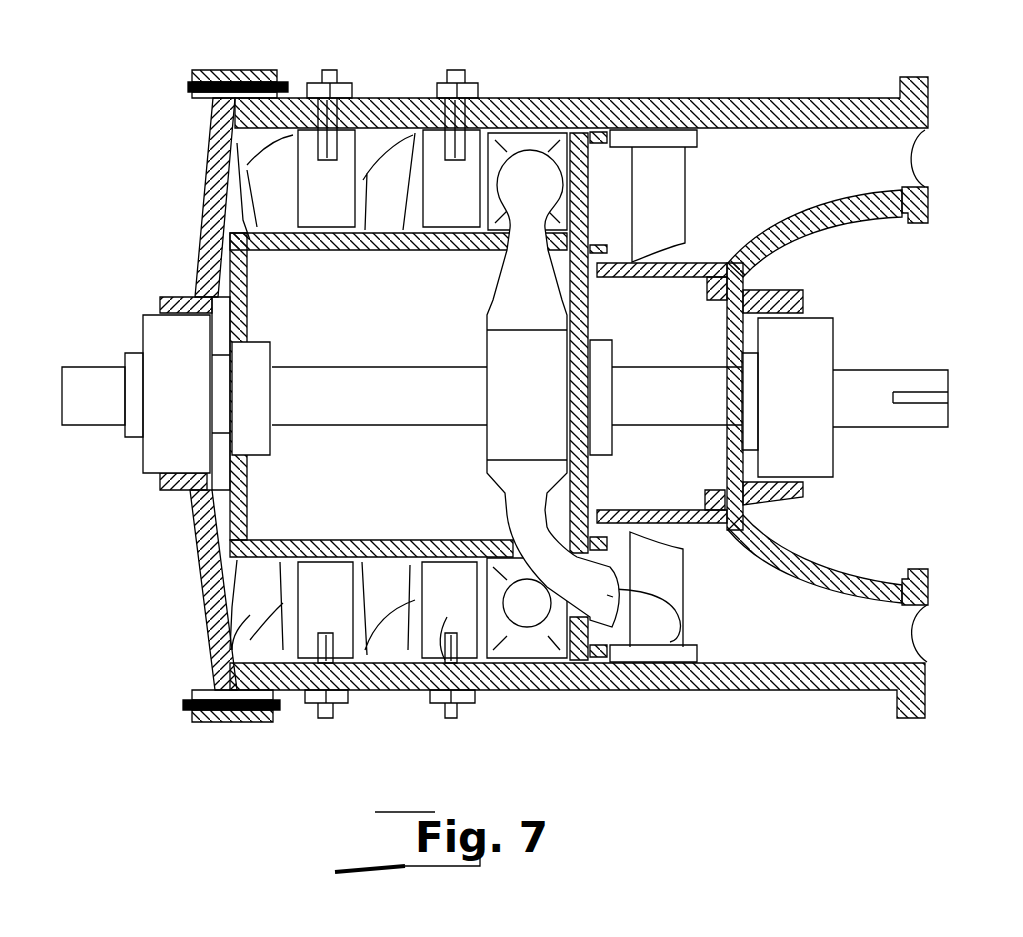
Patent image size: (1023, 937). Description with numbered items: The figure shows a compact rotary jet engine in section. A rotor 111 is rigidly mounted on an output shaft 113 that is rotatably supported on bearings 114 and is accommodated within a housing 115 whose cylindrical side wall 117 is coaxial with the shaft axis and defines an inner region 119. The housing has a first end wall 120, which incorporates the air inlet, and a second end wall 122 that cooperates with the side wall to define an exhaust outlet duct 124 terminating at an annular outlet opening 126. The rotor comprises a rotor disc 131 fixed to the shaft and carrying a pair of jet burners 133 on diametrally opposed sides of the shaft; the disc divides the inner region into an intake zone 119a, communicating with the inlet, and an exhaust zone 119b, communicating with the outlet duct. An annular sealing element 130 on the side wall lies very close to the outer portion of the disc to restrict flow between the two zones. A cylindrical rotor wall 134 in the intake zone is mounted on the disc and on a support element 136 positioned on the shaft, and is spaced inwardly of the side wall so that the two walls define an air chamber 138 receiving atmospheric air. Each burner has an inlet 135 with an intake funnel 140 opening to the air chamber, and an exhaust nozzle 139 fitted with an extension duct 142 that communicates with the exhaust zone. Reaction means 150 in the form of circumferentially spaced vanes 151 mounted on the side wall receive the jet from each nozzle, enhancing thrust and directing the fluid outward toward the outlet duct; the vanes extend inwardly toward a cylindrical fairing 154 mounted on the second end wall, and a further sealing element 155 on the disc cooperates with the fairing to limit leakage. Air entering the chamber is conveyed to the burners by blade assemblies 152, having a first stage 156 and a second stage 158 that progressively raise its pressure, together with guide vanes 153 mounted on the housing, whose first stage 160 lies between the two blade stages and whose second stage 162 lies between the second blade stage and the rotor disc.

The rotor 111 is at (243, 217).
The output shaft 113 is at (933, 368).
The bearings 114 is at (160, 343).
The housing 115 is at (585, 97).
The cylindrical side wall 117 is at (783, 98).
The inner region 119 is at (492, 690).
The intake zone 119a is at (397, 690).
The exhaust zone 119b is at (743, 637).
The first end wall 120 is at (207, 583).
The second end wall 122 is at (817, 558).
The exhaust outlet duct 124 is at (850, 643).
The annular outlet opening 126 is at (916, 628).
The annular sealing element 130 is at (640, 140).
The rotor disc 131 is at (607, 157).
The jet burners 133 is at (487, 292).
The cylindrical rotor wall 134 is at (207, 555).
The inlet 135 is at (545, 133).
The support element 136 is at (250, 373).
The air chamber 138 is at (370, 135).
The exhaust nozzle 139 is at (605, 692).
The intake funnel 140 is at (542, 690).
The extension duct 142 is at (660, 693).
The reaction means 150 is at (704, 180).
The vanes 151 is at (688, 223).
The blade assemblies 152 is at (255, 607).
The guide vanes 153 is at (272, 710).
The cylindrical fairing 154 is at (647, 513).
The further sealing element 155 is at (740, 530).
The first stage 156 is at (215, 607).
The second stage 158 is at (385, 632).
The first stage 160 is at (297, 692).
The second stage 162 is at (452, 713).